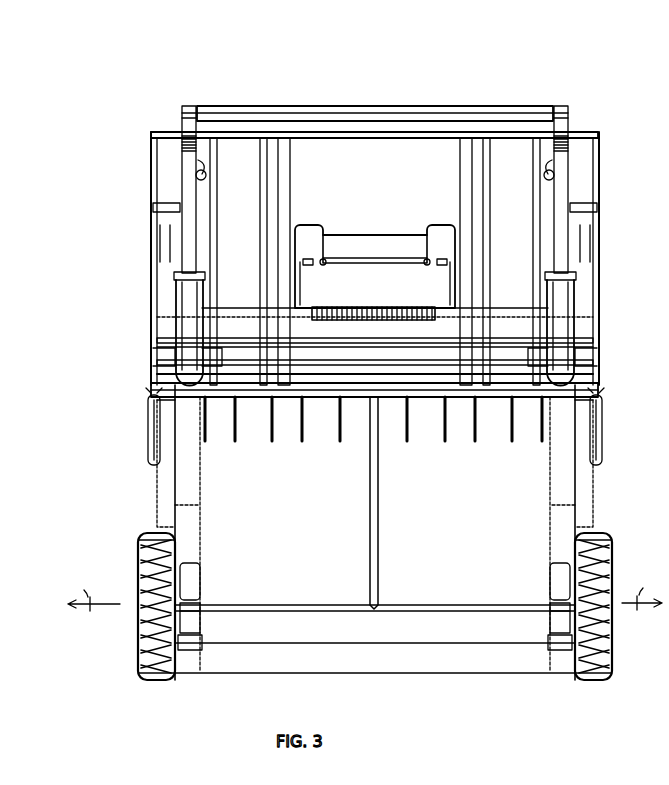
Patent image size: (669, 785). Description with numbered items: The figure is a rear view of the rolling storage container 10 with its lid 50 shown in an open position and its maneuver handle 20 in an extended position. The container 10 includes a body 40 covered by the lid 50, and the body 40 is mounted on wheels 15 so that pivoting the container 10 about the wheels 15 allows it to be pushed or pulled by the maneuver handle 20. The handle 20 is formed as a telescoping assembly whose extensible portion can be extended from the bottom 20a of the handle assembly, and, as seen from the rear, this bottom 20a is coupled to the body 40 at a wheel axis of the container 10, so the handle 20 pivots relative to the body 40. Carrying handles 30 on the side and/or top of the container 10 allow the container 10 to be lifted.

The rolling storage container 10 is at (586, 41).
The maneuver handle 20 is at (576, 209).
The bottom of the handle assembly 20a is at (193, 621).
The carrying handle 30 is at (152, 444).
The body 40 is at (243, 501).
The lid 50 is at (414, 168).
The wheels 15 is at (136, 604).